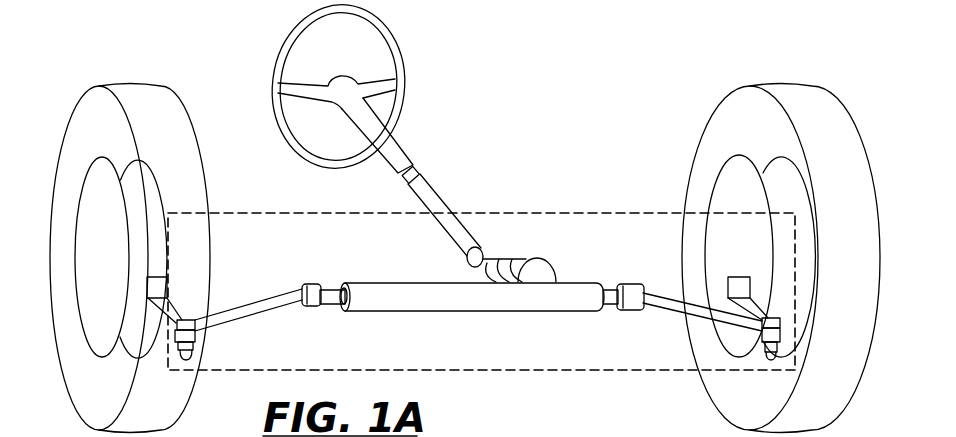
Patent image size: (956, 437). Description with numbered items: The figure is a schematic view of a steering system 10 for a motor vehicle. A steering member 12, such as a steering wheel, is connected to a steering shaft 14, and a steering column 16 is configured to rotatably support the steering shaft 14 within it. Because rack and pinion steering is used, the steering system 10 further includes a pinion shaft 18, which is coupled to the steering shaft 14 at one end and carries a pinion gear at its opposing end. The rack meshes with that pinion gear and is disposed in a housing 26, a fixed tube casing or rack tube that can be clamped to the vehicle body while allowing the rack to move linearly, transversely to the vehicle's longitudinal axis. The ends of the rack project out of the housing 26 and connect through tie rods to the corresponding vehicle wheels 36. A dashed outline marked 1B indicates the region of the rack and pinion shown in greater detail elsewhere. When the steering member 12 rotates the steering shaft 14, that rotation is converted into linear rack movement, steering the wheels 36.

The steering system 10 is at (514, 86).
The steering member 12 is at (400, 83).
The steering shaft 14 is at (417, 173).
The steering column 16 is at (388, 136).
The pinion shaft 18 is at (484, 256).
The housing 26 is at (367, 283).
The vehicle wheels 36 is at (88, 97).
The detail region shown in FIG. 1B is at (592, 372).